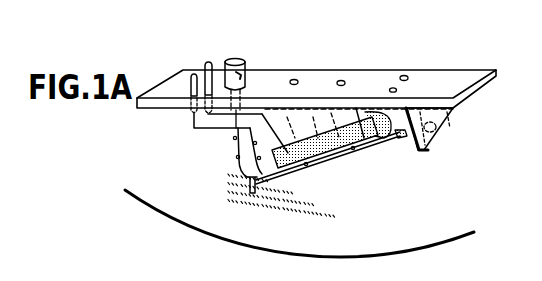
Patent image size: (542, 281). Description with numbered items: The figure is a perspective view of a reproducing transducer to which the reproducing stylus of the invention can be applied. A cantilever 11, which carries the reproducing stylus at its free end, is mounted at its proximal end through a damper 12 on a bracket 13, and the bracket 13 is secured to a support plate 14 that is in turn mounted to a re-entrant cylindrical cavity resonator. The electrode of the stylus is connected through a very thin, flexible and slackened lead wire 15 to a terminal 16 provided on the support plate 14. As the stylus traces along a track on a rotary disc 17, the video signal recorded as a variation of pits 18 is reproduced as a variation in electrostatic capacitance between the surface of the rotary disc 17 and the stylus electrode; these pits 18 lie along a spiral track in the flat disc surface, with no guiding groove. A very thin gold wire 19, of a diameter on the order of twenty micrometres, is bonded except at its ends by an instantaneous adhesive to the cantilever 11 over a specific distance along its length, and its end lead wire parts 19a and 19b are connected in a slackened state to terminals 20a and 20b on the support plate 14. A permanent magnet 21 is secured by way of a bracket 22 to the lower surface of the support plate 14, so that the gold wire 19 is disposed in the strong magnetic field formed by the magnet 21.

The cantilever 11 is at (338, 156).
The damper 12 is at (402, 144).
The bracket 13 is at (453, 117).
The support plate 14 is at (430, 72).
The lead wire 15 is at (236, 146).
The terminal 16 is at (232, 57).
The rotary disc 17 is at (177, 207).
The pits 18 is at (256, 200).
The gold wire 19 is at (305, 164).
The lead wire part 19a is at (390, 142).
The lead wire part 19b is at (247, 163).
The terminal 20a is at (207, 64).
The terminal 20b is at (192, 78).
The permanent magnet 21 is at (371, 140).
The bracket 22 is at (303, 117).